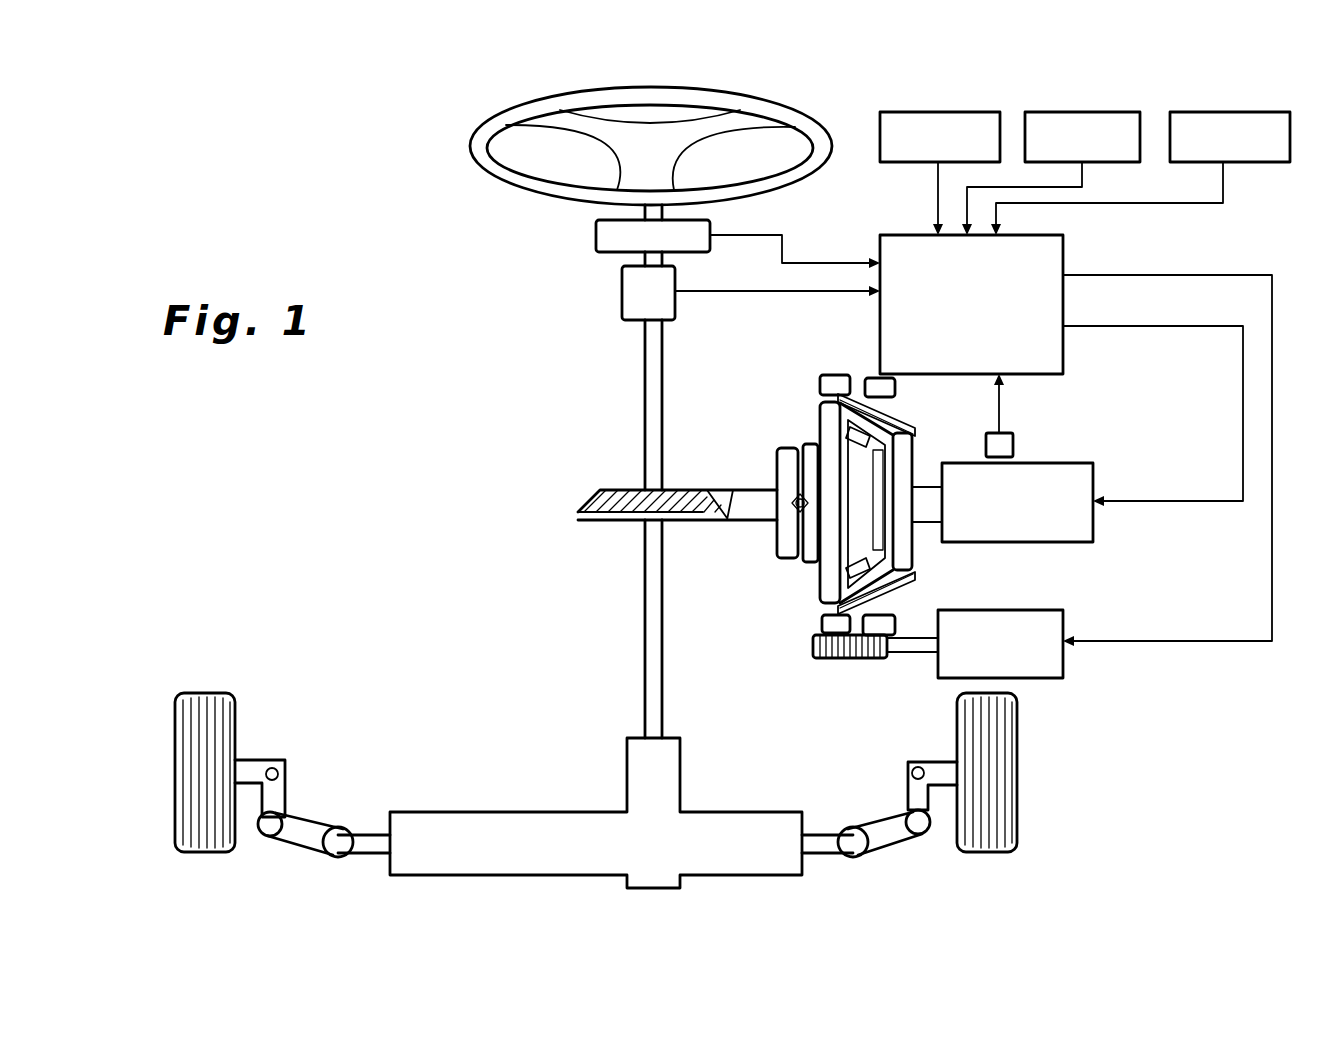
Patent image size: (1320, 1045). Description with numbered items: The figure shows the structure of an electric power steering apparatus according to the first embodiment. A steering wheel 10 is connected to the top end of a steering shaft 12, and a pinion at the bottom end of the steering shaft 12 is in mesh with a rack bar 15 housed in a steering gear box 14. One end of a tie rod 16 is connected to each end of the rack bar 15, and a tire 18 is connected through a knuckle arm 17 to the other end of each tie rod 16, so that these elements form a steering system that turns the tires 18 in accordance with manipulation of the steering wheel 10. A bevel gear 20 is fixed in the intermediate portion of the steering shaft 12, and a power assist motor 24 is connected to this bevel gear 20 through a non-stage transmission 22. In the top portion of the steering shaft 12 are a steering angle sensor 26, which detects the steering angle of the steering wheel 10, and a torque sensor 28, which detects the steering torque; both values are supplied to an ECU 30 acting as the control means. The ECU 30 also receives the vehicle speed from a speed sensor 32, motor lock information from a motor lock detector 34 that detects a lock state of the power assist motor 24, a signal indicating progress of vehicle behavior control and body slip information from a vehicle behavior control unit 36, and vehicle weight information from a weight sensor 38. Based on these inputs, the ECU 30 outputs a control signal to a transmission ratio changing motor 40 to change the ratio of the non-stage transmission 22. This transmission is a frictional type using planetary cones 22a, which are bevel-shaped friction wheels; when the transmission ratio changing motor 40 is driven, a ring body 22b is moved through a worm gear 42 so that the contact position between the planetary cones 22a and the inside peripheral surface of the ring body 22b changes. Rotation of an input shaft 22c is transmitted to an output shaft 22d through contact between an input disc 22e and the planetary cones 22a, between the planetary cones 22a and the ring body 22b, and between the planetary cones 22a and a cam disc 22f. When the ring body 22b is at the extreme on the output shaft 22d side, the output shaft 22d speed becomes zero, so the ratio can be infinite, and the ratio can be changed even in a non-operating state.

The steering wheel 10 is at (497, 127).
The steering shaft 12 is at (645, 400).
The steering gear box 14 is at (710, 875).
The rack bar 15 is at (372, 850).
The tie rod 16 is at (298, 840).
The knuckle arm 17 is at (288, 778).
The tire 18 is at (200, 853).
The bevel gear 20 is at (578, 516).
The non-stage transmission 22 is at (860, 510).
The planetary cones 22a is at (892, 417).
The ring body 22b is at (872, 380).
The input shaft 22c is at (905, 432).
The output shaft 22d is at (755, 498).
The input disc 22e is at (907, 563).
The cam disc 22f is at (822, 592).
The power assist motor 24 is at (1095, 477).
The steering angle sensor 26 is at (596, 238).
The torque sensor 28 is at (622, 297).
The ECU 30 is at (1067, 260).
The speed sensor 32 is at (932, 112).
The motor lock detector 34 is at (1017, 438).
The vehicle behavior control unit 36 is at (1070, 112).
The weight sensor 38 is at (1213, 112).
The transmission ratio changing motor 40 is at (1037, 678).
The worm gear 42 is at (813, 645).